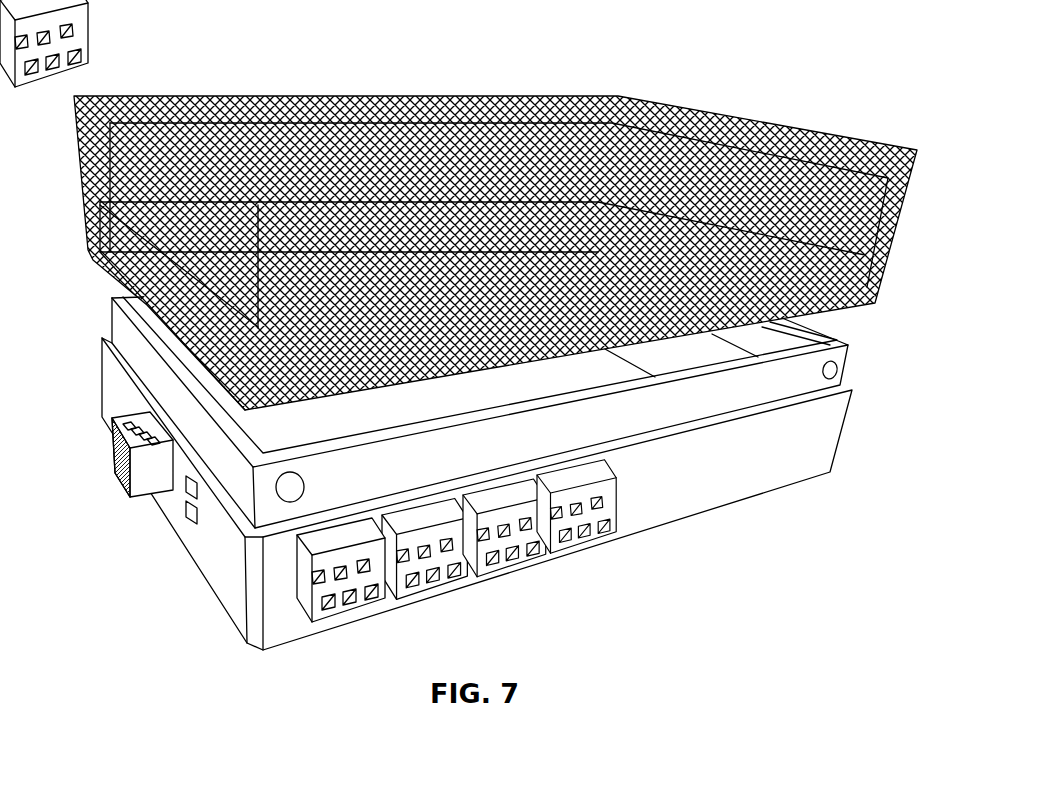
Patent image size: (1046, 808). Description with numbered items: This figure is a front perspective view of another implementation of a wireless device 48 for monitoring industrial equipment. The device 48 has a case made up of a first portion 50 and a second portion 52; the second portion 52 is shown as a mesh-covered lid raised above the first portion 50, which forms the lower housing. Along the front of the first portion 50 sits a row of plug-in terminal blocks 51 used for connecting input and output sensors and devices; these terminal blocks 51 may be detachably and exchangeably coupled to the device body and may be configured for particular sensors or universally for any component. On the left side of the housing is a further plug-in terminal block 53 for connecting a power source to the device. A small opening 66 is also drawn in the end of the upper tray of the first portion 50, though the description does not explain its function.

The device 48 is at (770, 95).
The first portion 50 is at (845, 434).
The plug-in terminal blocks 51 is at (583, 508).
The second portion 52 is at (897, 243).
The plug-in terminal block 53 is at (152, 486).
The alignment hole 66 is at (837, 372).